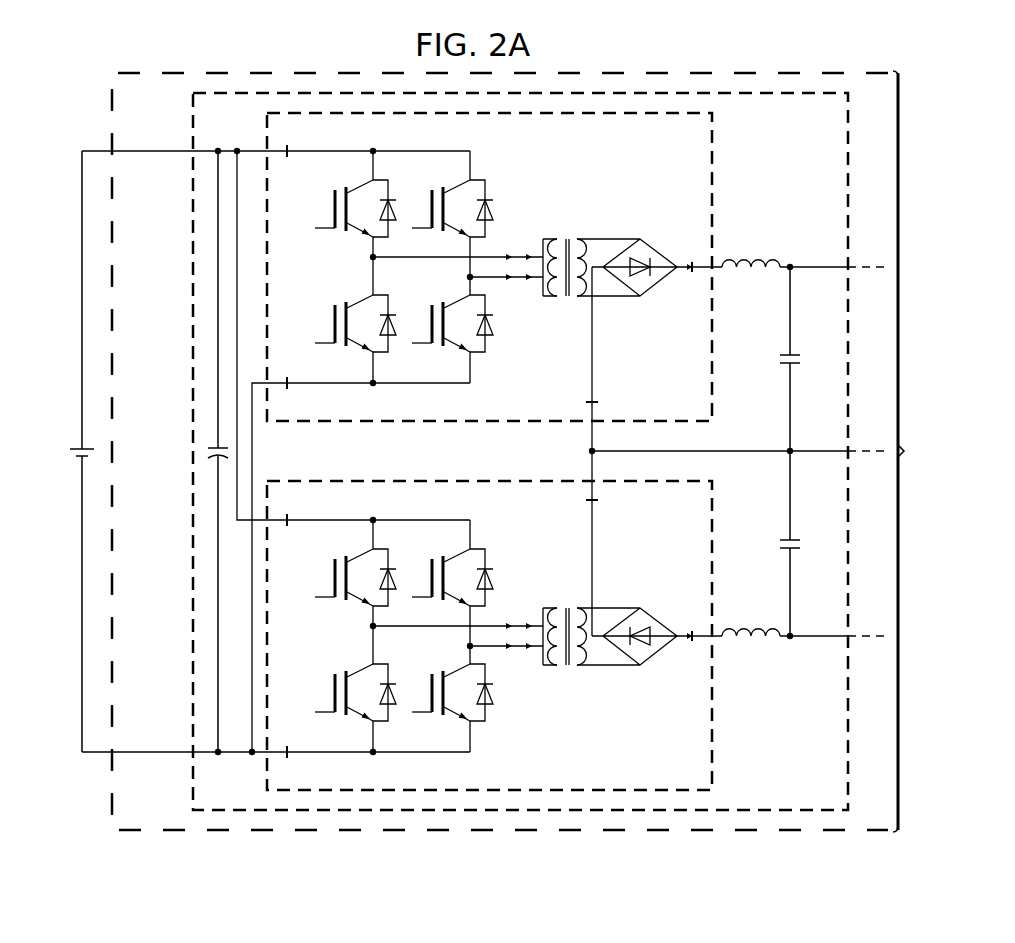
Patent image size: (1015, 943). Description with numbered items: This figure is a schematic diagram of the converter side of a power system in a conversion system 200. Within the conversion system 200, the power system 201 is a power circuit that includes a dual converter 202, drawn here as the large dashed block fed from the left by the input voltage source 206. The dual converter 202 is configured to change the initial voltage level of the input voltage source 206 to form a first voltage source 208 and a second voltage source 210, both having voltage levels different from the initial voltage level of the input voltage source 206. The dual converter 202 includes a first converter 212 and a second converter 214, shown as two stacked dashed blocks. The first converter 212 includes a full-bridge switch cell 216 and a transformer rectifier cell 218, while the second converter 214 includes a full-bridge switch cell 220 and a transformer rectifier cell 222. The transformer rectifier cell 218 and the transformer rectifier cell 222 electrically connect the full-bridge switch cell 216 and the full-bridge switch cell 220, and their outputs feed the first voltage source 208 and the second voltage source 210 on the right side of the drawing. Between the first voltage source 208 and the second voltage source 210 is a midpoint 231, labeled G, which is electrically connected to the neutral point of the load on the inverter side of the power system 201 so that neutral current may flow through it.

The conversion system 200 is at (80, 82).
The power system 201 is at (104, 125).
The dual converter 202 is at (183, 367).
The input voltage source 206 is at (78, 446).
The first voltage source 208 is at (800, 360).
The second voltage source 210 is at (800, 546).
The first converter 212 is at (405, 430).
The second converter 214 is at (508, 472).
The full-bridge switch cell 216 is at (334, 213).
The transformer rectifier cell 218 is at (607, 238).
The full-bridge switch cell 220 is at (333, 695).
The transformer rectifier cell 222 is at (607, 668).
The midpoint 231 is at (788, 457).